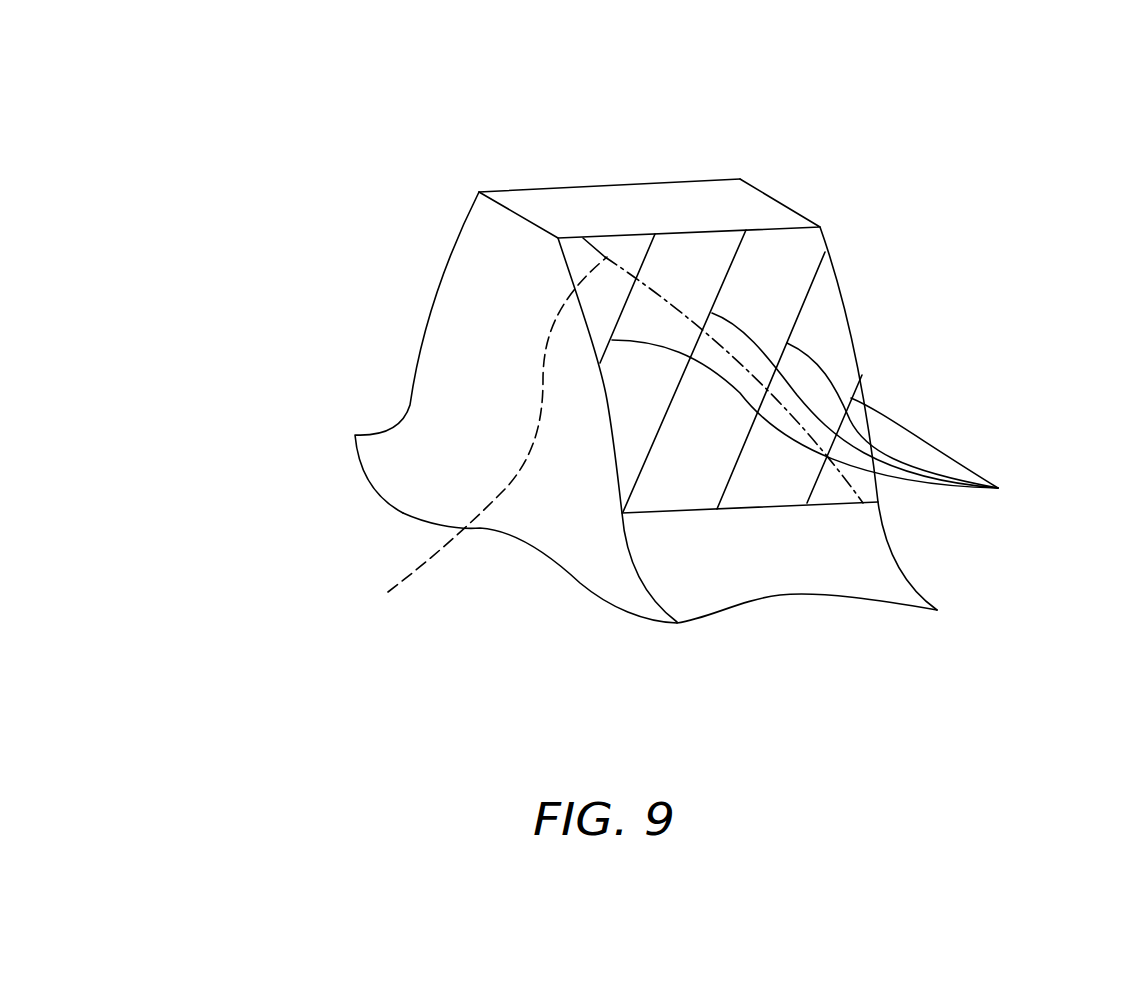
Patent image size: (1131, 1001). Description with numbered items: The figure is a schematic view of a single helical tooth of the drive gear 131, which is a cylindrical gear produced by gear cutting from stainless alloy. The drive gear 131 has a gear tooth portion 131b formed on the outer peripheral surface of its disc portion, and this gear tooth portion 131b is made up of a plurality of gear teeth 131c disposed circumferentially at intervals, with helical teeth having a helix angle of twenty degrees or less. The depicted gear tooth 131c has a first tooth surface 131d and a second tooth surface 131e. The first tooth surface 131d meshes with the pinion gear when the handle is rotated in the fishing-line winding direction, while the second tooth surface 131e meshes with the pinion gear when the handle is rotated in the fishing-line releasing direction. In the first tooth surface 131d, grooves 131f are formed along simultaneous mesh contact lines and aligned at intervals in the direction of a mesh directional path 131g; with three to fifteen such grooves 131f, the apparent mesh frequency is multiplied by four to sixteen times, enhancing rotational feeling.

The drive gear 131 is at (890, 198).
The gear tooth portion 131b is at (585, 173).
The gear tooth 131c is at (683, 200).
The first tooth surface 131d is at (827, 303).
The second tooth surface 131e is at (437, 272).
The groove 131f is at (846, 411).
The mesh directional path 131g is at (454, 439).